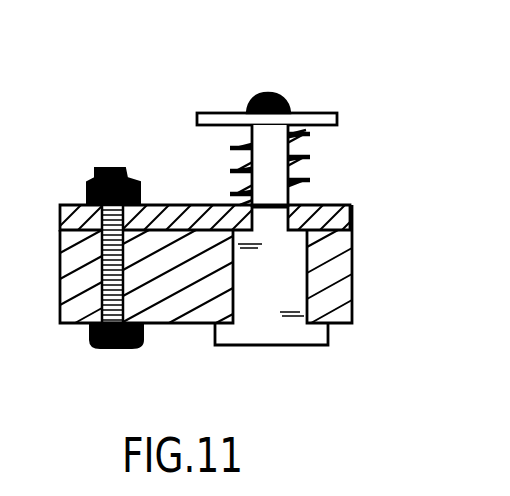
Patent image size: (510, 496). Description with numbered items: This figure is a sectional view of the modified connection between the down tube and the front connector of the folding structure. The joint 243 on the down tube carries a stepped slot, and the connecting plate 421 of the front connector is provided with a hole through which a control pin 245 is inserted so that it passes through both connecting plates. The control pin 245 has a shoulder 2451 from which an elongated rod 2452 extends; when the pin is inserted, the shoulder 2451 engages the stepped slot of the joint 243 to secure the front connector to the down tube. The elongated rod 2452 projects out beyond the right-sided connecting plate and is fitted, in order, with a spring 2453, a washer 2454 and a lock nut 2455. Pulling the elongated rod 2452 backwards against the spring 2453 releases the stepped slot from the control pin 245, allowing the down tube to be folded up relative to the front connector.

The washer 2454 is at (313, 111).
The lock nut 2455 is at (268, 93).
The spring 2453 is at (303, 181).
The elongated rod 2452 is at (300, 141).
The connecting plate 421 is at (173, 213).
The joint 243 is at (194, 276).
The shoulder 2451 is at (288, 257).
The control pin 245 is at (273, 320).